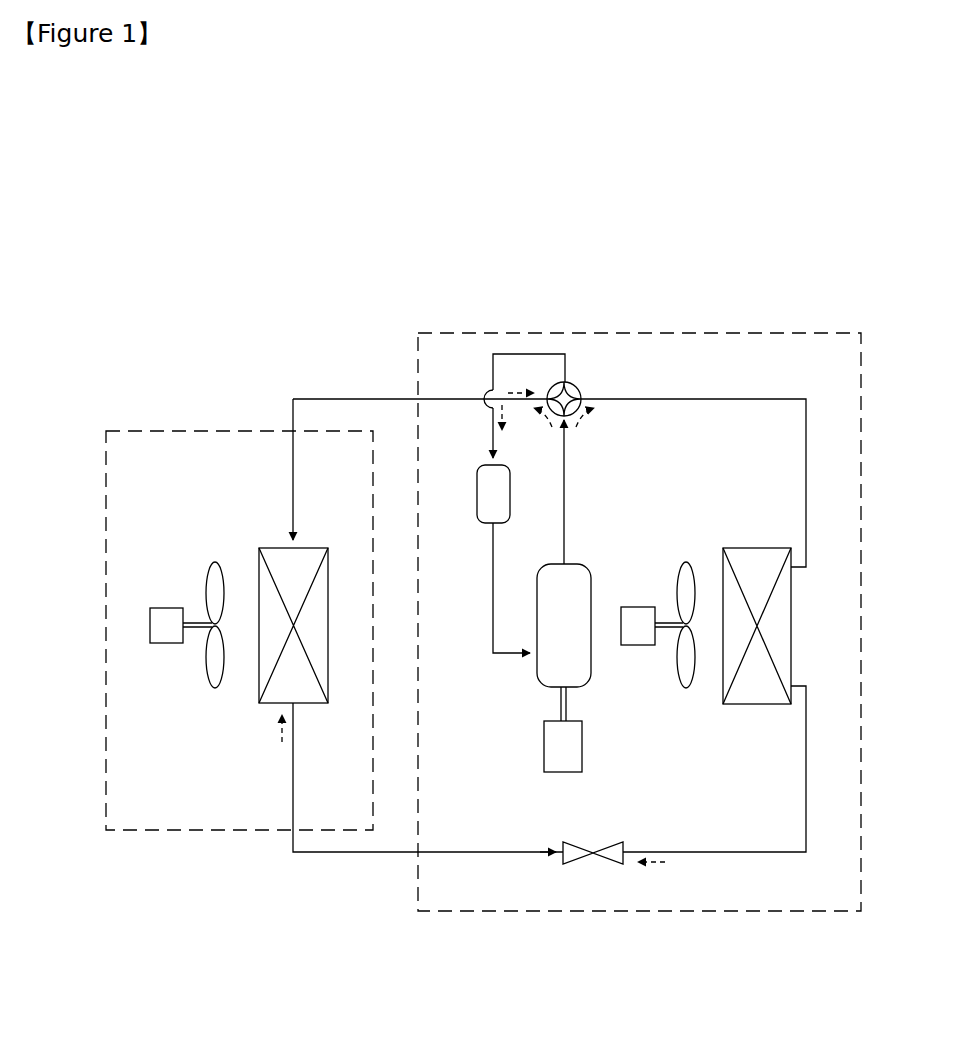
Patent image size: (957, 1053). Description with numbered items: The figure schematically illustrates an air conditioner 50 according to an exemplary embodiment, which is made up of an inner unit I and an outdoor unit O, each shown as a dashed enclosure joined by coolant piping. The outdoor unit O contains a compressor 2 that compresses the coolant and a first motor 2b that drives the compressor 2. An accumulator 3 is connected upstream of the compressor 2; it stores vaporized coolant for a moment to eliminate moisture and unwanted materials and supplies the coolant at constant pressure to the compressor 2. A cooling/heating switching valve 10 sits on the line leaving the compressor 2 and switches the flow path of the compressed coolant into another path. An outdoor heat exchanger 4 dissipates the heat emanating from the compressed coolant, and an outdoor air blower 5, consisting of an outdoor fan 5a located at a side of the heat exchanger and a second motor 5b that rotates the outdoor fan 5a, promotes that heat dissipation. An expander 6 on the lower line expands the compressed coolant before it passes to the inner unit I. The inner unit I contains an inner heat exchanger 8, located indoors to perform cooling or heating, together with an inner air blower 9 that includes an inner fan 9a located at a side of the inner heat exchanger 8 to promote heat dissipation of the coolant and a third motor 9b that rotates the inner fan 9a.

The compressor 2 is at (562, 657).
The first motor for compressor 2b is at (582, 745).
The accumulator 3 is at (477, 498).
The outdoor heat exchanger 4 is at (772, 613).
The outdoor air blower 5 is at (654, 575).
The outdoor fan 5a is at (683, 575).
The second motor 5b is at (638, 617).
The expander 6 is at (610, 866).
The inner heat exchanger 8 is at (299, 692).
The inner air blower 9 is at (166, 746).
The inner fan 9a is at (215, 675).
The third motor 9b is at (163, 633).
The cooling/heating switching valve 10 is at (577, 383).
The air conditioner 50 is at (812, 257).
The inner unit I is at (247, 836).
The outdoor unit O is at (685, 928).